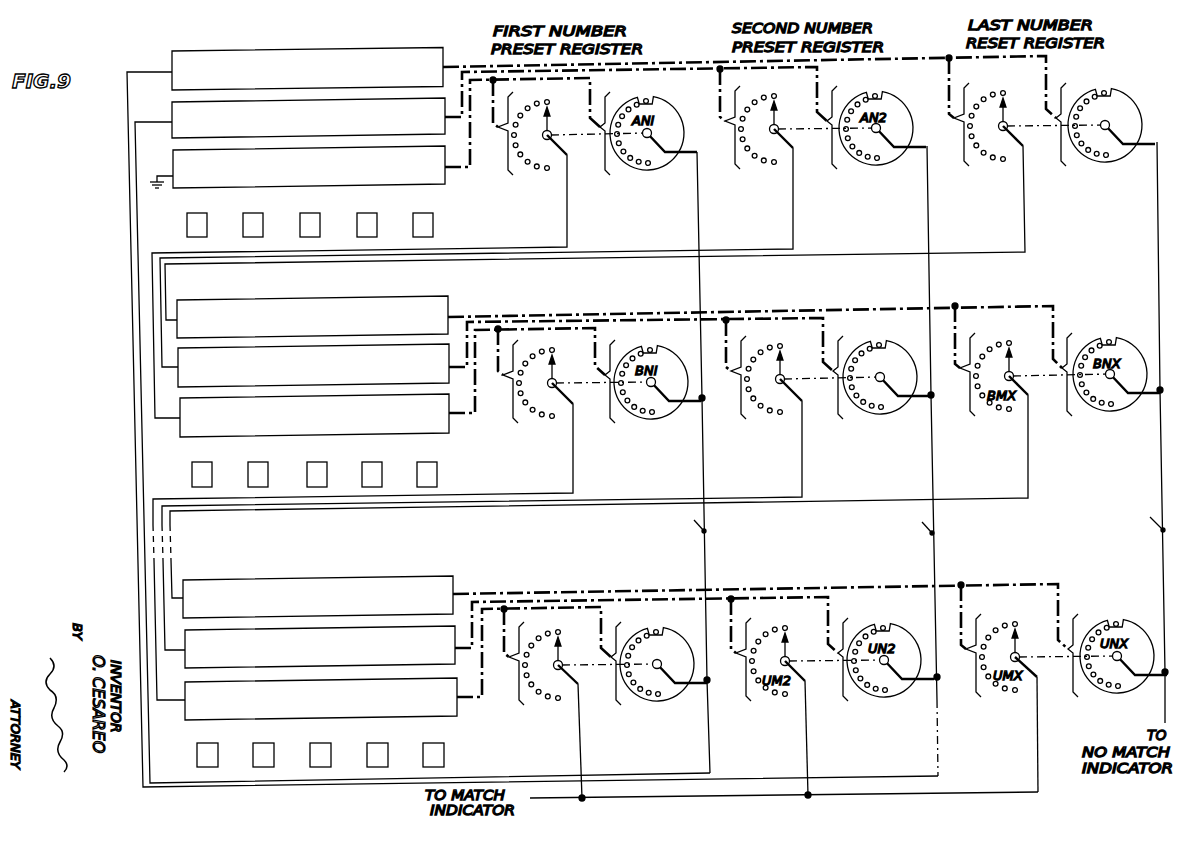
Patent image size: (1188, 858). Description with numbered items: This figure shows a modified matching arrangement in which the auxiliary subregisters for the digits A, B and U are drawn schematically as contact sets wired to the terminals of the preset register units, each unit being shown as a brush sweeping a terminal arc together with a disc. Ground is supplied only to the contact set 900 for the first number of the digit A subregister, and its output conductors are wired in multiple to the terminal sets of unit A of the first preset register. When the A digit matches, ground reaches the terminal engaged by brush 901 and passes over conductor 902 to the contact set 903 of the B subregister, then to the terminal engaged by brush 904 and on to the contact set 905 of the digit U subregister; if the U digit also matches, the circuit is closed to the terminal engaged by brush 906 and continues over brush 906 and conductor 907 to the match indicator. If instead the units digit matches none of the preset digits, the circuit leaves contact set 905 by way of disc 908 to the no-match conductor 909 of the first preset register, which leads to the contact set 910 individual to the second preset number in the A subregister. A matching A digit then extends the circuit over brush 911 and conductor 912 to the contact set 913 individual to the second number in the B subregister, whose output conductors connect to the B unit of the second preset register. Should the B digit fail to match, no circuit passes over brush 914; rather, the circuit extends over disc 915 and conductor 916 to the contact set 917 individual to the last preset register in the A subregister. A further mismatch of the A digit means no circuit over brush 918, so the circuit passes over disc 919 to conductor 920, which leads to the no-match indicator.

The contact set 900 is at (445, 188).
The brush 901 is at (548, 120).
The conductor 902 is at (568, 218).
The contact set 903 is at (442, 437).
The brush 904 is at (553, 379).
The contact set 905 is at (455, 720).
The brush 906 is at (559, 650).
The conductor 907 is at (544, 799).
The disc 908 is at (677, 699).
The no-match conductor 909 is at (706, 470).
The contact set 910 is at (172, 135).
The brush 911 is at (775, 114).
The conductor 912 is at (794, 218).
The contact set 913 is at (452, 378).
The brush 914 is at (780, 367).
The disc 915 is at (915, 405).
The conductor 916 is at (935, 479).
The contact set 917 is at (216, 51).
The brush 918 is at (1003, 114).
The disc 919 is at (1137, 114).
The conductor 920 is at (1163, 602).